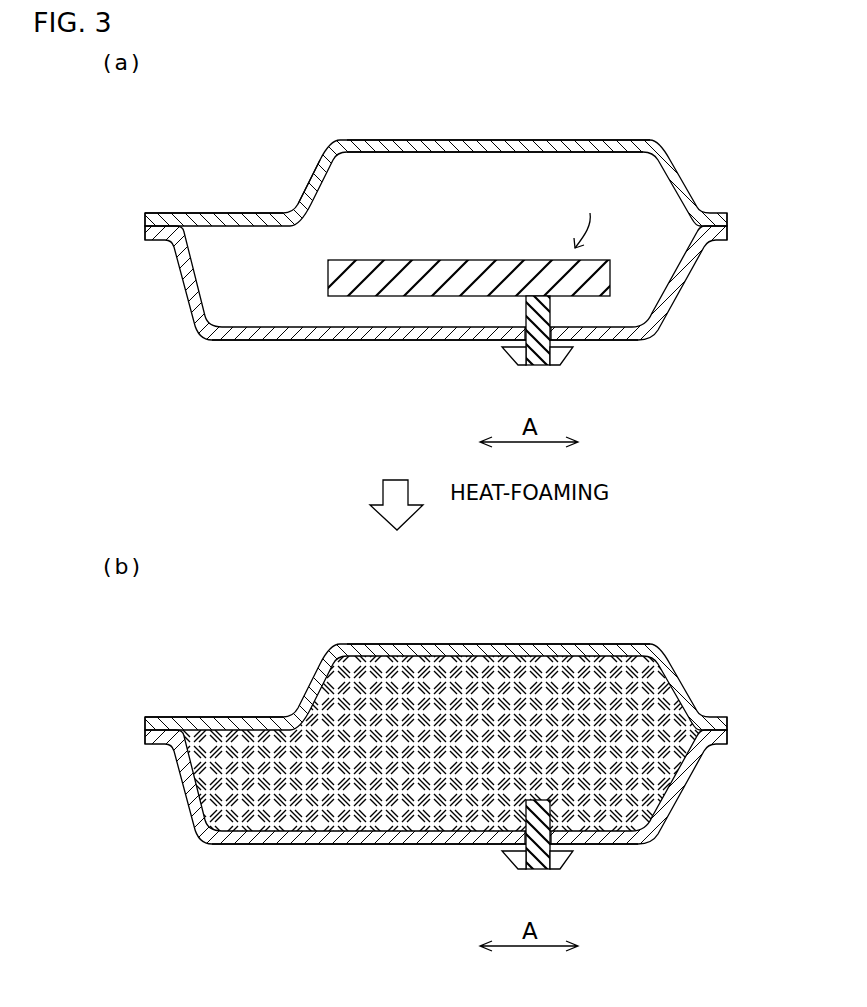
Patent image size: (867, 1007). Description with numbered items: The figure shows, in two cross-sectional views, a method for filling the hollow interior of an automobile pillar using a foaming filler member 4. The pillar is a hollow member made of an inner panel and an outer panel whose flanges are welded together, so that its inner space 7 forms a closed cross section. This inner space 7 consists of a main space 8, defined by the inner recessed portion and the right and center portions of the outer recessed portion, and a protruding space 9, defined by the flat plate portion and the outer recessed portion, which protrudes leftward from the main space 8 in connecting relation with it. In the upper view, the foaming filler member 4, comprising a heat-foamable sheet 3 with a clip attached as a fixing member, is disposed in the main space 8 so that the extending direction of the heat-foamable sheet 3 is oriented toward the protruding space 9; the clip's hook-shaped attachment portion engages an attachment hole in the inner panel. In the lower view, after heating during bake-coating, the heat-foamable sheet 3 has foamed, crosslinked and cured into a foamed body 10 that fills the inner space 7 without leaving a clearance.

The heat-foamable sheet 3 is at (437, 258).
The foaming filler member 4 is at (585, 218).
The inner space 7 is at (363, 90).
The main space 8 is at (377, 183).
The protruding space 9 is at (255, 240).
The foamed body 10 is at (441, 710).